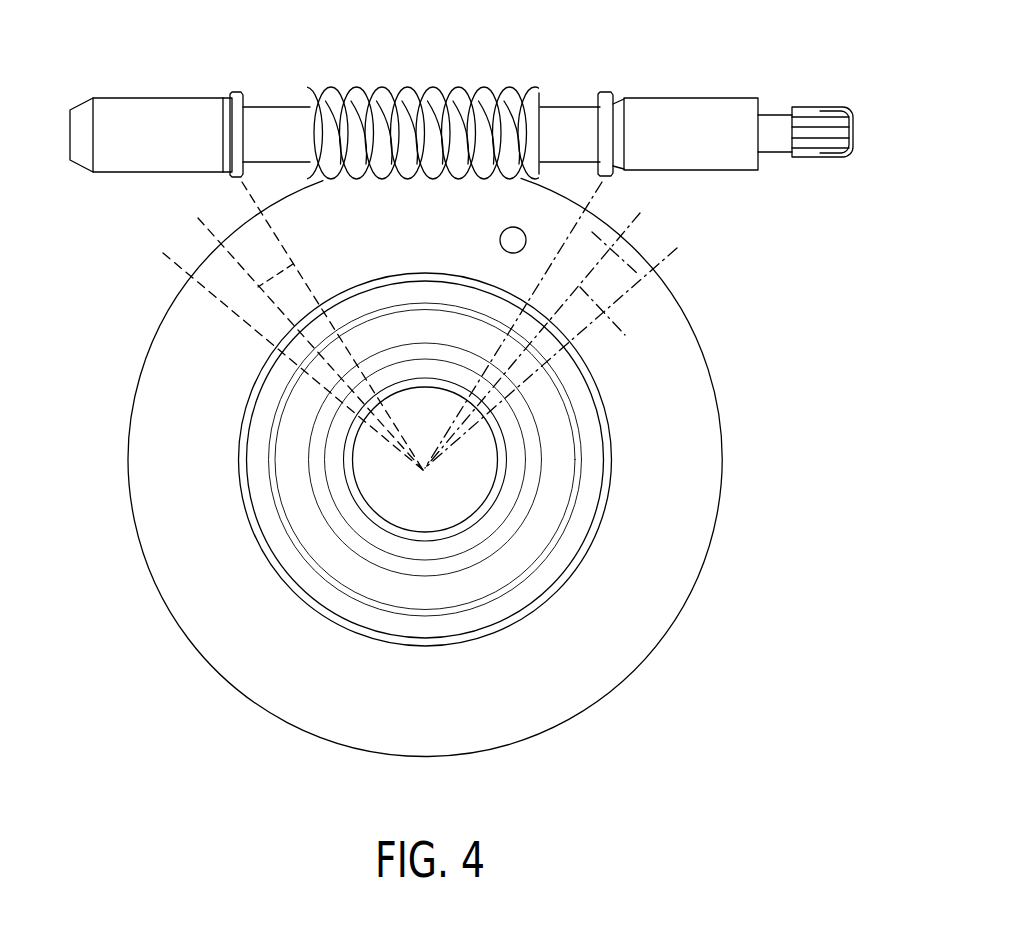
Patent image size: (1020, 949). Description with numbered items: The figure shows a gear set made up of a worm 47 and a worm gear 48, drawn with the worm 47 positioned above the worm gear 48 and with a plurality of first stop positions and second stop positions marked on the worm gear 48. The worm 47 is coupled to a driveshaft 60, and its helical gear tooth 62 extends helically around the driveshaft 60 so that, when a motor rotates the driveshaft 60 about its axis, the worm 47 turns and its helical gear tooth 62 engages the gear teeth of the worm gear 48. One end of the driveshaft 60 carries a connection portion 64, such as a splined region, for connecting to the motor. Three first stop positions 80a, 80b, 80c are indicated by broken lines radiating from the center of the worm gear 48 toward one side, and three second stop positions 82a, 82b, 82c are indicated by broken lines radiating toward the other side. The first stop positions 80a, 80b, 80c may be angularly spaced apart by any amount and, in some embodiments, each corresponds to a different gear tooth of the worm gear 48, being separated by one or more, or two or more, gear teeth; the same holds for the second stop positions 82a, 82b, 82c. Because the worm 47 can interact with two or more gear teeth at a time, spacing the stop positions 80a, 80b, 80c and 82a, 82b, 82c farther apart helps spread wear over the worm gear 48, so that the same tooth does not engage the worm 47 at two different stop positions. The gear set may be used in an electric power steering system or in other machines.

The worm 47 is at (303, 90).
The helical gear tooth 62 is at (436, 88).
The driveshaft 60 is at (572, 118).
The connection portion 64 is at (820, 113).
The worm gear 48 is at (137, 353).
The first stop position 80a is at (270, 228).
The first stop position 80b is at (293, 263).
The first stop position 80c is at (183, 270).
The second stop position 82a is at (637, 275).
The second stop position 82b is at (625, 336).
The second stop position 82c is at (660, 268).